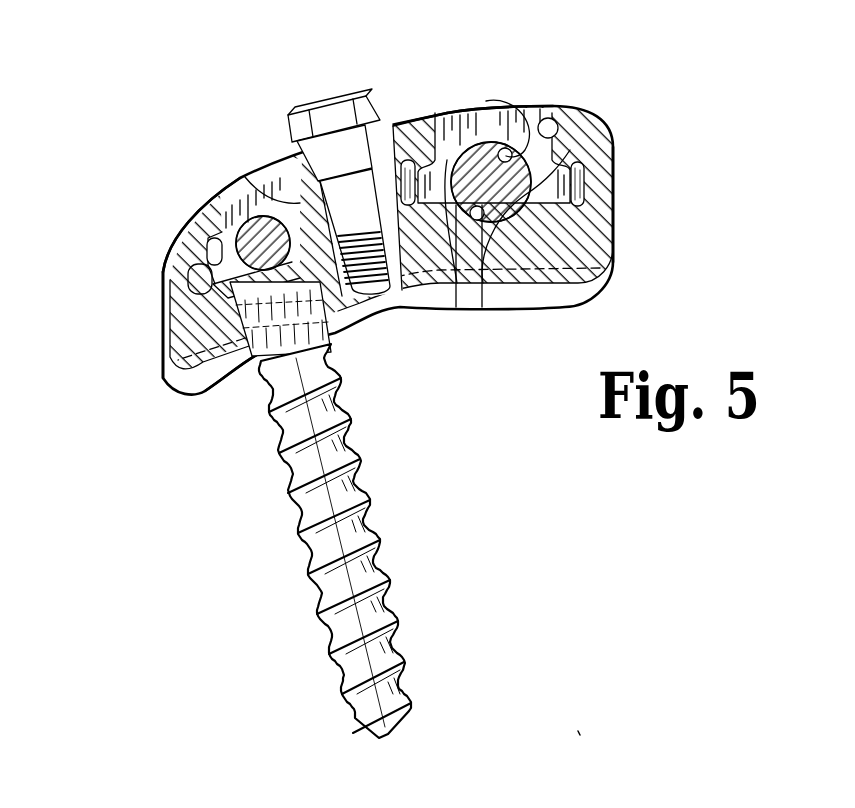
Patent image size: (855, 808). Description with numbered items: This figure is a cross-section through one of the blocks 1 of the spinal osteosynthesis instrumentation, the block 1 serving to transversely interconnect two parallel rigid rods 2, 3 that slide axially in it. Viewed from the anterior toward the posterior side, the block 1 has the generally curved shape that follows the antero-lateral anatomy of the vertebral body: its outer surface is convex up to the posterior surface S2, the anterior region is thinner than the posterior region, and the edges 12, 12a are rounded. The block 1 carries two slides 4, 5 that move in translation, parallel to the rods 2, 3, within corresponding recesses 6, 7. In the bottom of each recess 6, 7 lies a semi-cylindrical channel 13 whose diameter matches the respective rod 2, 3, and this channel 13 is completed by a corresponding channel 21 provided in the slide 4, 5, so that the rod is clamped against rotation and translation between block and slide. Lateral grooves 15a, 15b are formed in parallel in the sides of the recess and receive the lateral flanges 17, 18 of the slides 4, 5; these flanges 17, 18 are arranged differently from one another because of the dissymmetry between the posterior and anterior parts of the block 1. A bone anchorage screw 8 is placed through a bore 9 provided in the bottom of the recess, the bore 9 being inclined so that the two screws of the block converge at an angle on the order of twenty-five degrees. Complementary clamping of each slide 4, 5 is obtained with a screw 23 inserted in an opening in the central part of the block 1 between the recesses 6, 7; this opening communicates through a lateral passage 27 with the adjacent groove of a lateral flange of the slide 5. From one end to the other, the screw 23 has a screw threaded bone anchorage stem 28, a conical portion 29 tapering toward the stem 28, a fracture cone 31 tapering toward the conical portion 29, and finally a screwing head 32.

The block 1 is at (640, 246).
The rigid rod 2 is at (573, 285).
The rigid rod 3 is at (205, 198).
The slide 4 is at (490, 108).
The slide 5 is at (220, 190).
The recess 6 is at (558, 133).
The recess 7 is at (200, 248).
The bone anchorage screw 8 is at (382, 540).
The bore 9 is at (230, 378).
The edge 12 is at (186, 382).
The edge 12a is at (163, 277).
The semi-cylindrical channel 13 is at (487, 315).
The lateral groove 15a is at (585, 193).
The lateral groove 15b is at (200, 292).
The lateral flange 17 is at (612, 150).
The lateral flange 18 is at (455, 310).
The channel 21 is at (486, 101).
The screw 23 is at (321, 186).
The lateral passage 27 is at (270, 192).
The screw threaded bone anchorage stem 28 is at (380, 310).
The conical portion 29 is at (366, 224).
The fracture cone 31 is at (310, 153).
The screwing head 32 is at (338, 98).
The posterior surface S2 is at (400, 118).